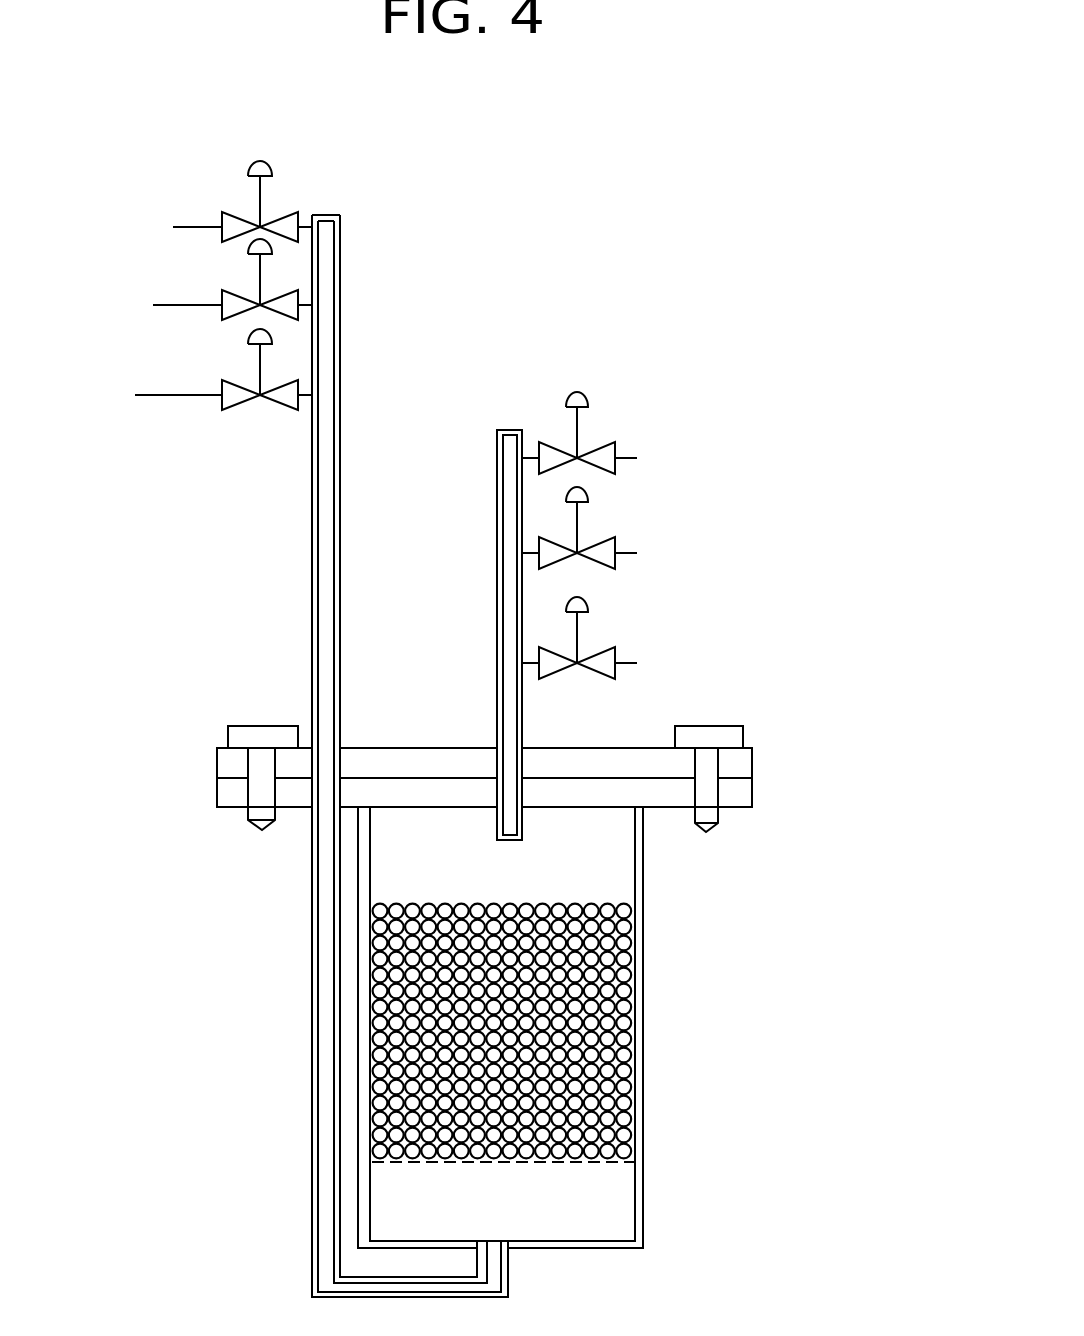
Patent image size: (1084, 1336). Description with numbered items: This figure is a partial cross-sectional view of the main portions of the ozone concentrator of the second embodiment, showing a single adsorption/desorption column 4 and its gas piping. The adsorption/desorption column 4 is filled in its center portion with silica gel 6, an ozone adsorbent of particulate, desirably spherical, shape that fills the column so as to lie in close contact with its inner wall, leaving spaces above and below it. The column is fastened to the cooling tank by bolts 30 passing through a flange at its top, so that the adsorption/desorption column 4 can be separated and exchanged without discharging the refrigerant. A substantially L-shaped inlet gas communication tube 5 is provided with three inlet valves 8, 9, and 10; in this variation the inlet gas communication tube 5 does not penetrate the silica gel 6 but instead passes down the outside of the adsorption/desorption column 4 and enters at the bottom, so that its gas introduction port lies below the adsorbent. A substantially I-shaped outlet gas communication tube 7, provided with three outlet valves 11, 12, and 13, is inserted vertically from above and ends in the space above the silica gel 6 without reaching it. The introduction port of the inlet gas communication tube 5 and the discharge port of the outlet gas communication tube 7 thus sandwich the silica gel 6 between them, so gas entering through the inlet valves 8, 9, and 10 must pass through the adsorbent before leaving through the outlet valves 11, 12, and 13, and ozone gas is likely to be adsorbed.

The adsorption/desorption column 4 is at (628, 1208).
The inlet gas communication tube 5 is at (313, 615).
The silica gel 6 is at (590, 1033).
The outlet gas communication tube 7 is at (505, 430).
The inlet valve 8 is at (222, 388).
The inlet valve 9 is at (222, 297).
The inlet valve 10 is at (222, 219).
The outlet valve 11 is at (595, 653).
The outlet valve 12 is at (613, 545).
The outlet valve 13 is at (613, 443).
The bolt 30 is at (716, 728).